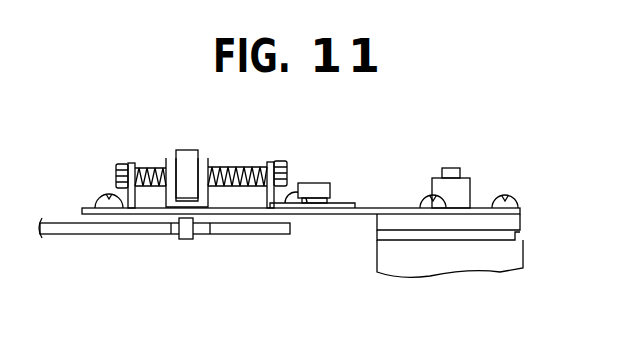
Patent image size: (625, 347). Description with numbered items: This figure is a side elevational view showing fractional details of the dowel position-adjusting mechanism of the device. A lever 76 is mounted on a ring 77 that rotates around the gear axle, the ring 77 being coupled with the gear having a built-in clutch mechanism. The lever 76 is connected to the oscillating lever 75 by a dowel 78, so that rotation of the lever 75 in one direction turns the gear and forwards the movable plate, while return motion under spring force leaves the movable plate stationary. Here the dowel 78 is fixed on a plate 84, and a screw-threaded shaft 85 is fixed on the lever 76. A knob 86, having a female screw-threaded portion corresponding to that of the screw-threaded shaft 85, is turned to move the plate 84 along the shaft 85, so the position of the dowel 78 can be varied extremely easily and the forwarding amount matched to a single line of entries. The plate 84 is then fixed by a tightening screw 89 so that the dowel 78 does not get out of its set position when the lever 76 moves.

The lever 75 is at (105, 234).
The lever 76 is at (375, 208).
The ring 77 is at (517, 222).
The dowel 78 is at (186, 240).
The plate 84 is at (228, 214).
The screw-threaded shaft 85 is at (247, 168).
The knob 86 is at (190, 162).
The tightening screw 89 is at (314, 190).